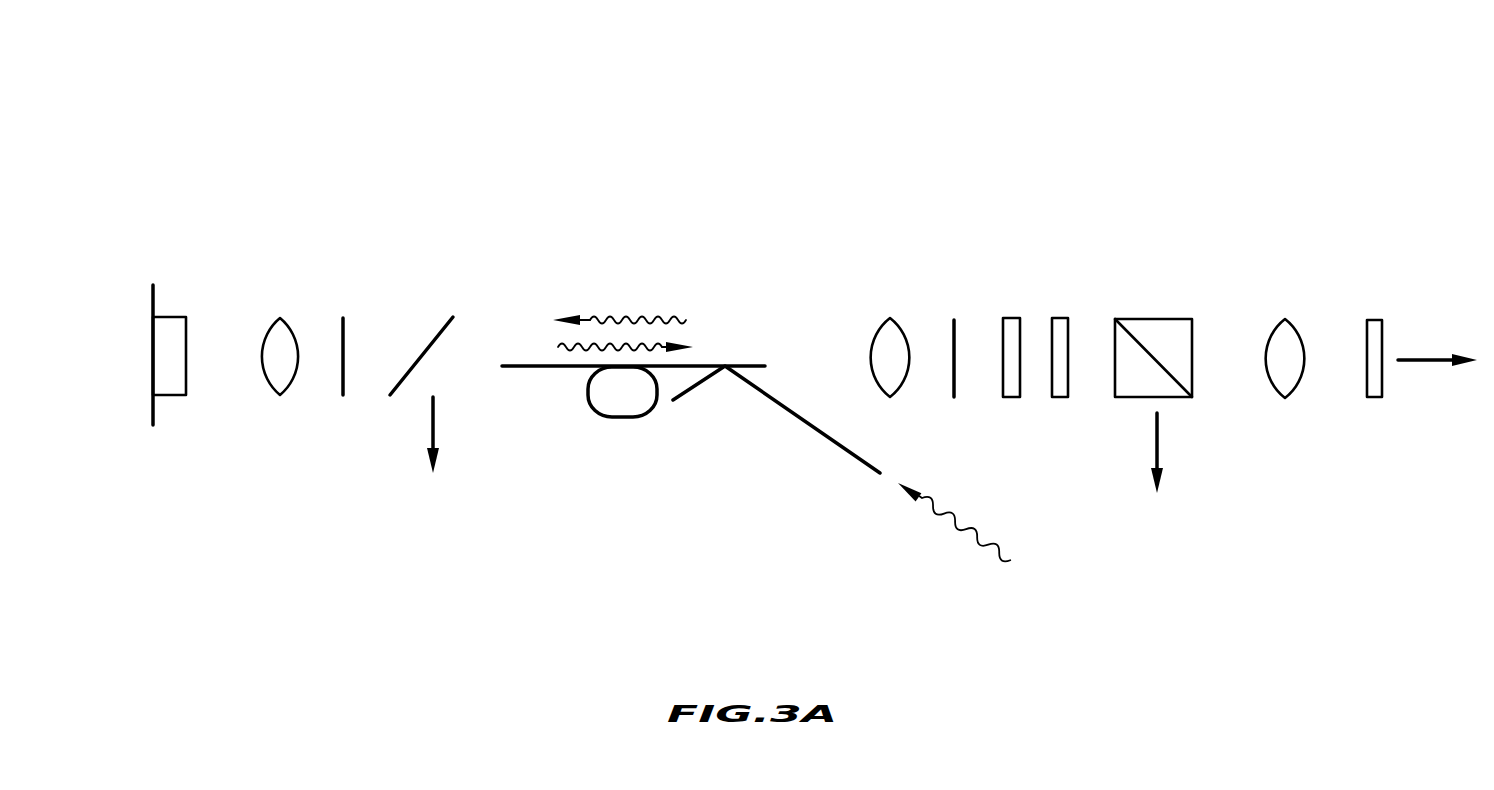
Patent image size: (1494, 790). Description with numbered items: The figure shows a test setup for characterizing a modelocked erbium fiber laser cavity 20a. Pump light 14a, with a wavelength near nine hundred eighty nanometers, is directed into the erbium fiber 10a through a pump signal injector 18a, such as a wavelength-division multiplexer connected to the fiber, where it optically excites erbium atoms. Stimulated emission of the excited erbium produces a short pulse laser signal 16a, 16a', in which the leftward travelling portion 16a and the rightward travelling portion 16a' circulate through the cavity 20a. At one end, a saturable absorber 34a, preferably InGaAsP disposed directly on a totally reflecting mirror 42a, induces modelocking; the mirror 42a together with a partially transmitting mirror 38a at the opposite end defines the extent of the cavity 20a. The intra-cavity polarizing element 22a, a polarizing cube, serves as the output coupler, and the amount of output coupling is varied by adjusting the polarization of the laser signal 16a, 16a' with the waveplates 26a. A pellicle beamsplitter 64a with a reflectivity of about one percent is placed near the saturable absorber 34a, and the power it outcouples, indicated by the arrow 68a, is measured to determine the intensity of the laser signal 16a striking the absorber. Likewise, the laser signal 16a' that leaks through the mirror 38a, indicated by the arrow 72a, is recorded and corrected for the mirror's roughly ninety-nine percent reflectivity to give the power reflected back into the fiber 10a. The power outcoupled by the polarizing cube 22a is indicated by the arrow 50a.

The erbium fiber 10a is at (622, 418).
The pump light 14a is at (960, 533).
The laser signal (leftward travelling portion) 16a is at (619, 288).
The laser signal (rightward travelling portion) 16a' is at (666, 324).
The pump signal injector 18a is at (812, 427).
The cavity 20a is at (985, 115).
The polarizing element 22a is at (1142, 319).
The waveplates 26a is at (1060, 318).
The saturable absorber 34a is at (170, 317).
The partially transmitting mirror 38a is at (1373, 398).
The totally reflecting mirror 42a is at (153, 408).
The arrow indicating outcoupled power 50a is at (1158, 430).
The pellicle beamsplitter 64a is at (428, 348).
The arrow indicating outcoupled power 68a is at (435, 413).
The arrow indicating outcoupled power 72a is at (1432, 357).